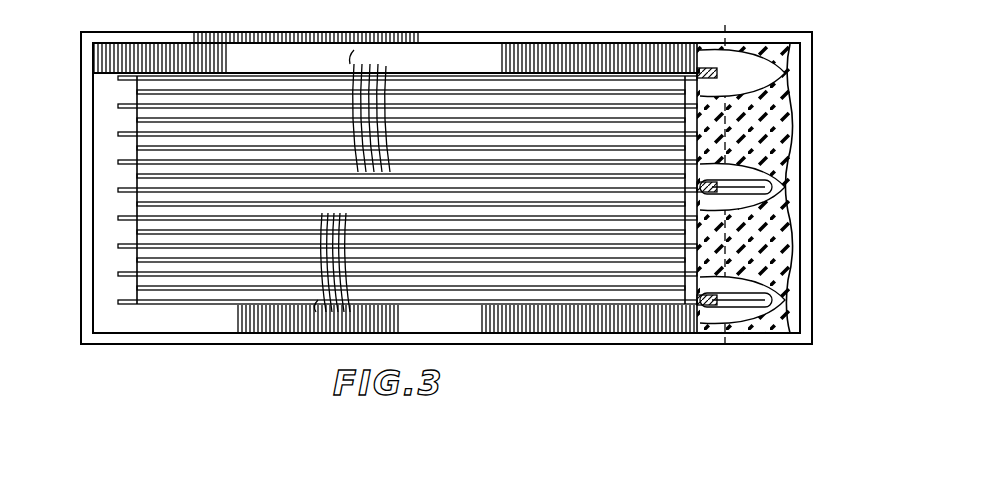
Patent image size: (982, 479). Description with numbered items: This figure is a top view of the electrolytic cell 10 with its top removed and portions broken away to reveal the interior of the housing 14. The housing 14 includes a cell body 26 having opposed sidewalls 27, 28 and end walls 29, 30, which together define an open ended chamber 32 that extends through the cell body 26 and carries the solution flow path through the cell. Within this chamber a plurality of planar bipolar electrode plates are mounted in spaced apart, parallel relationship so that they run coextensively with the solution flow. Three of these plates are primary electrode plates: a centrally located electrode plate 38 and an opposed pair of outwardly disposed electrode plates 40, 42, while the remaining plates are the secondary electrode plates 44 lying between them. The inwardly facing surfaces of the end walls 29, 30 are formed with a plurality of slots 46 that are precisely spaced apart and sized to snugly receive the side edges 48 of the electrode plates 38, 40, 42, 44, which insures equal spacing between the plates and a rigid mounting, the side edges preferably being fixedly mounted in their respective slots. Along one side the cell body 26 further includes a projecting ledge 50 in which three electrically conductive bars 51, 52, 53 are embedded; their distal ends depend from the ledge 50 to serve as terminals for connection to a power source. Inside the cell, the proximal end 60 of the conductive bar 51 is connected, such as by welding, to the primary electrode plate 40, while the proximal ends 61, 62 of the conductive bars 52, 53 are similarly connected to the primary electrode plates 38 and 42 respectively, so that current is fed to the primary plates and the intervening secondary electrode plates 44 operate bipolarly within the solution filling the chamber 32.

The electrolytic cell 10 is at (844, 50).
The housing 14 is at (826, 290).
The cell body 26 is at (459, 330).
The sidewall 27 is at (303, 33).
The sidewall 28 is at (270, 345).
The end wall 29 is at (80, 212).
The end wall 30 is at (793, 255).
The open ended chamber 32 is at (238, 304).
The centrally located electrode plate 38 is at (125, 172).
The electrode plate 40 is at (119, 80).
The electrode plate 42 is at (119, 286).
The secondary electrode plates 44 is at (351, 190).
The slots 46 is at (118, 106).
The side edges 48 is at (134, 70).
The projecting ledge 50 is at (792, 100).
The conductive bar 51 is at (772, 70).
The conductive bar 52 is at (776, 190).
The conductive bar 53 is at (776, 305).
The proximal end 60 is at (690, 46).
The proximal end 61 is at (731, 165).
The proximal end 62 is at (692, 308).